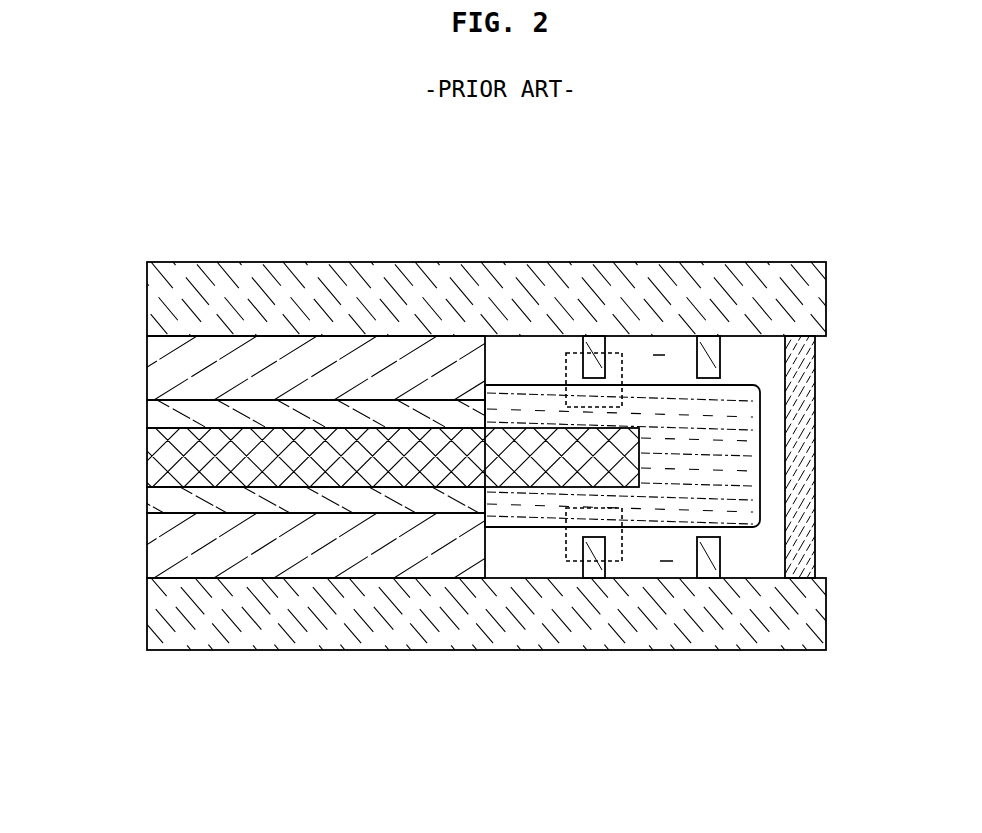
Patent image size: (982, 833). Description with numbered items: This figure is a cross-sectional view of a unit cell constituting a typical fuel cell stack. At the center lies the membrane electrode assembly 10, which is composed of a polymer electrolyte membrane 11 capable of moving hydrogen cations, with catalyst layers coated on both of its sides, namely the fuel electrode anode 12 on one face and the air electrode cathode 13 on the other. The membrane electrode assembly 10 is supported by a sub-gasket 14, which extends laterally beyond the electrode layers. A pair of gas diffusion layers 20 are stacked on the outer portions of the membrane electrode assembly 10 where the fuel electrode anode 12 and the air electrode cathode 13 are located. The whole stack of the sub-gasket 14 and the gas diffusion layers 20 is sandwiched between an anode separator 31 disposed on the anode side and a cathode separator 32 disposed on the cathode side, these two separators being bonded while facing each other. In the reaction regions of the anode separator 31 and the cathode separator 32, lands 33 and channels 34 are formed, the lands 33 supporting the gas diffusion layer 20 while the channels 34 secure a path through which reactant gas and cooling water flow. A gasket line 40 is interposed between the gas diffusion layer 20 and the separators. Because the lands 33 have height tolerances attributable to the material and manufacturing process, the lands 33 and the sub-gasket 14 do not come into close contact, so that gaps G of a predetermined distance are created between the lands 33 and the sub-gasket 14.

The membrane electrode assembly 10 is at (355, 457).
The polymer electrolyte membrane 11 is at (161, 461).
The fuel electrode anode 12 is at (161, 417).
The air electrode cathode 13 is at (279, 501).
The sub-gasket 14 is at (748, 503).
The gas diffusion layer 20 is at (161, 373).
The anode separator 31 is at (161, 305).
The cathode separator 32 is at (161, 613).
The land 33 is at (602, 347).
The channel 34 is at (658, 353).
The gasket line 40 is at (805, 411).
The gap G is at (567, 371).